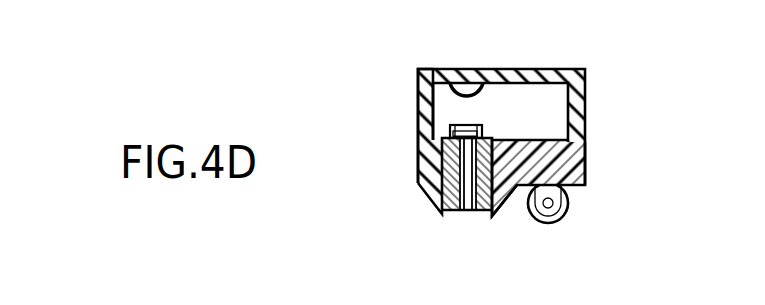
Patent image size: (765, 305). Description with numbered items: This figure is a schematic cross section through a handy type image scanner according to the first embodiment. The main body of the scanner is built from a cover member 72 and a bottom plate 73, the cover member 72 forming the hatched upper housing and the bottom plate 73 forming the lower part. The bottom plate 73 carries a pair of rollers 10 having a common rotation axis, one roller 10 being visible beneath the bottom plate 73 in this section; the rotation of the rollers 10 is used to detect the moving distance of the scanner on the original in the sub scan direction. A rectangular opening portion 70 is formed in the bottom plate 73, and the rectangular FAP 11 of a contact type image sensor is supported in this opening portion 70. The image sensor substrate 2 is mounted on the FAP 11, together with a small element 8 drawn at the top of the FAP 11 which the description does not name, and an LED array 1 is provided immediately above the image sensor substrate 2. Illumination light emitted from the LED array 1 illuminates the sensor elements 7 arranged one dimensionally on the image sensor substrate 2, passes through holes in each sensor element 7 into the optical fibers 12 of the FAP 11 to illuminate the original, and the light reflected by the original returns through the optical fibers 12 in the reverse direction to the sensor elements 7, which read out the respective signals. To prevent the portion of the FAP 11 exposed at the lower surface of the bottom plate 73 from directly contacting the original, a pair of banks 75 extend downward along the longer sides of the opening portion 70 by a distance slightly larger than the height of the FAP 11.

The LED array 1 is at (467, 90).
The image sensor substrate 2 is at (452, 126).
The sensor elements 7 is at (466, 130).
The nut 8 is at (482, 132).
The rollers 10 is at (570, 210).
The FAP 11 is at (449, 211).
The optical fibers 12 is at (470, 211).
The opening portion 70 is at (419, 159).
The cover member 72 is at (577, 96).
The bottom plate 73 is at (581, 167).
The banks 75 is at (435, 197).